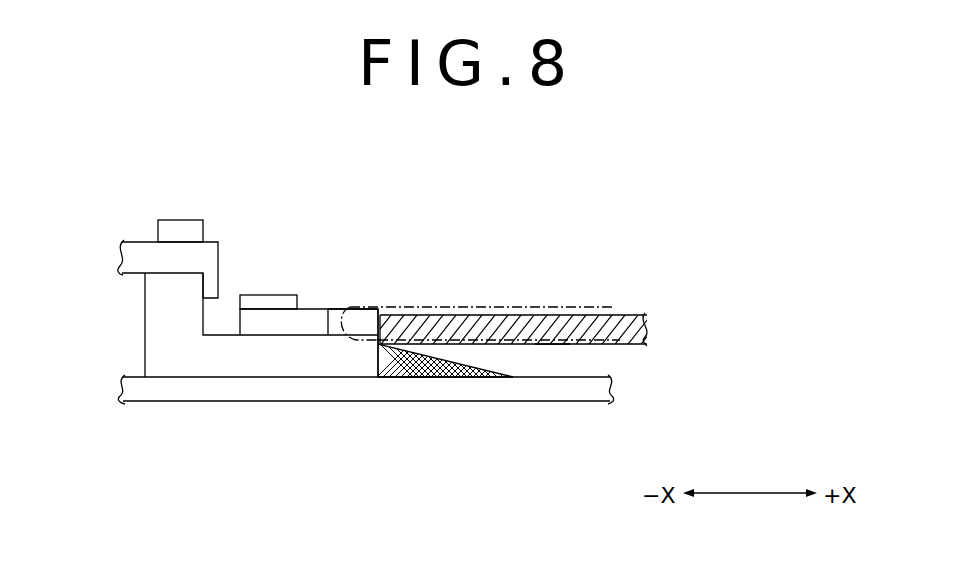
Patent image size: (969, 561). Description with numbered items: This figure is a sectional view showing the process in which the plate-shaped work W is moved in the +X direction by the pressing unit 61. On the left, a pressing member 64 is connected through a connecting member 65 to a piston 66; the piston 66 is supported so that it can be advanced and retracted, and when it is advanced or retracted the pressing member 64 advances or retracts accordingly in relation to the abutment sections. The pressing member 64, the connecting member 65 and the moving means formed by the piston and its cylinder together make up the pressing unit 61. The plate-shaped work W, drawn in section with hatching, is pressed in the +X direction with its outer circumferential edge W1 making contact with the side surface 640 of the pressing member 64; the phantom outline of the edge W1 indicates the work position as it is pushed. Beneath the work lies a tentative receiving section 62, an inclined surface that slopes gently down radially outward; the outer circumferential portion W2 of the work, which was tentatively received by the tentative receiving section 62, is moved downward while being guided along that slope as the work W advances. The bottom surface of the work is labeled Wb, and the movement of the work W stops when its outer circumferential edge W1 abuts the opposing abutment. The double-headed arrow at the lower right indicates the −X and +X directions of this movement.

The pressing unit 61 is at (176, 420).
The tentative receiving section 62 is at (466, 360).
The pressing member 64 is at (332, 340).
The side surface 640 is at (380, 308).
The connecting member 65 is at (238, 365).
The piston 66 is at (163, 262).
The plate-shaped work W is at (627, 318).
The outer circumferential edge W1 is at (370, 328).
The outer circumferential portion W2 is at (415, 377).
The workpiece bottom surface Wb is at (551, 346).